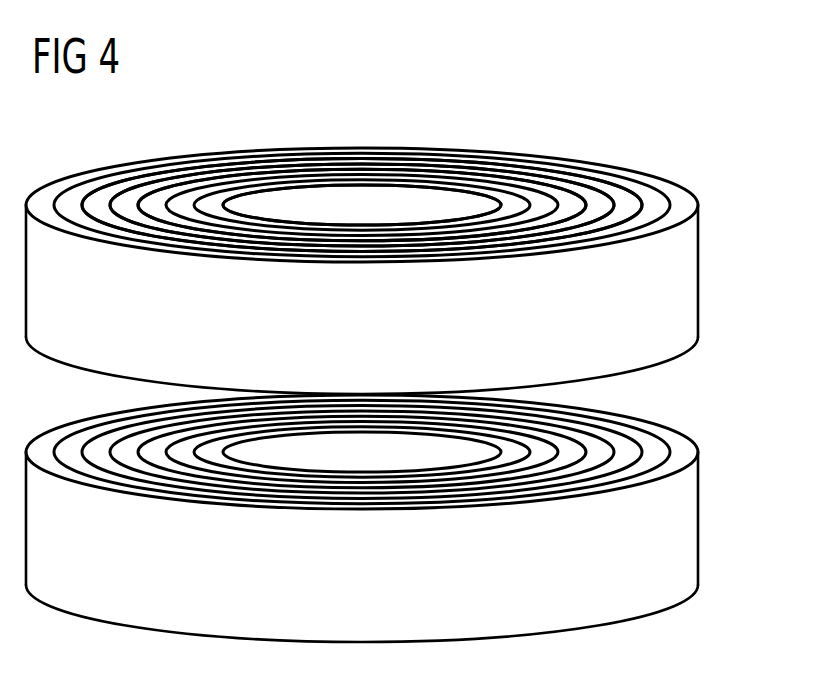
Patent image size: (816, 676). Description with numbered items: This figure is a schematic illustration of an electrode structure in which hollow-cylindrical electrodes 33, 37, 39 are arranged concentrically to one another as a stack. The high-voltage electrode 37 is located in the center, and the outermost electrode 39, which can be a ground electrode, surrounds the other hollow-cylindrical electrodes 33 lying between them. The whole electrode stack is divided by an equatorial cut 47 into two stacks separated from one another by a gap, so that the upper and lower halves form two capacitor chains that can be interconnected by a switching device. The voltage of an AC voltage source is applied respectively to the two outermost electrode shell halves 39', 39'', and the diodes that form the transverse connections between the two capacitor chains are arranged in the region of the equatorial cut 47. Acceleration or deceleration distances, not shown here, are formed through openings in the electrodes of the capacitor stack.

The hollow-cylindrical electrodes 33 is at (596, 192).
The high-voltage electrode 37 is at (484, 192).
The outermost electrode 39 is at (365, 195).
The outermost electrode shell half 39' is at (398, 299).
The outermost electrode shell half 39'' is at (401, 518).
The equatorial cut 47 is at (678, 396).